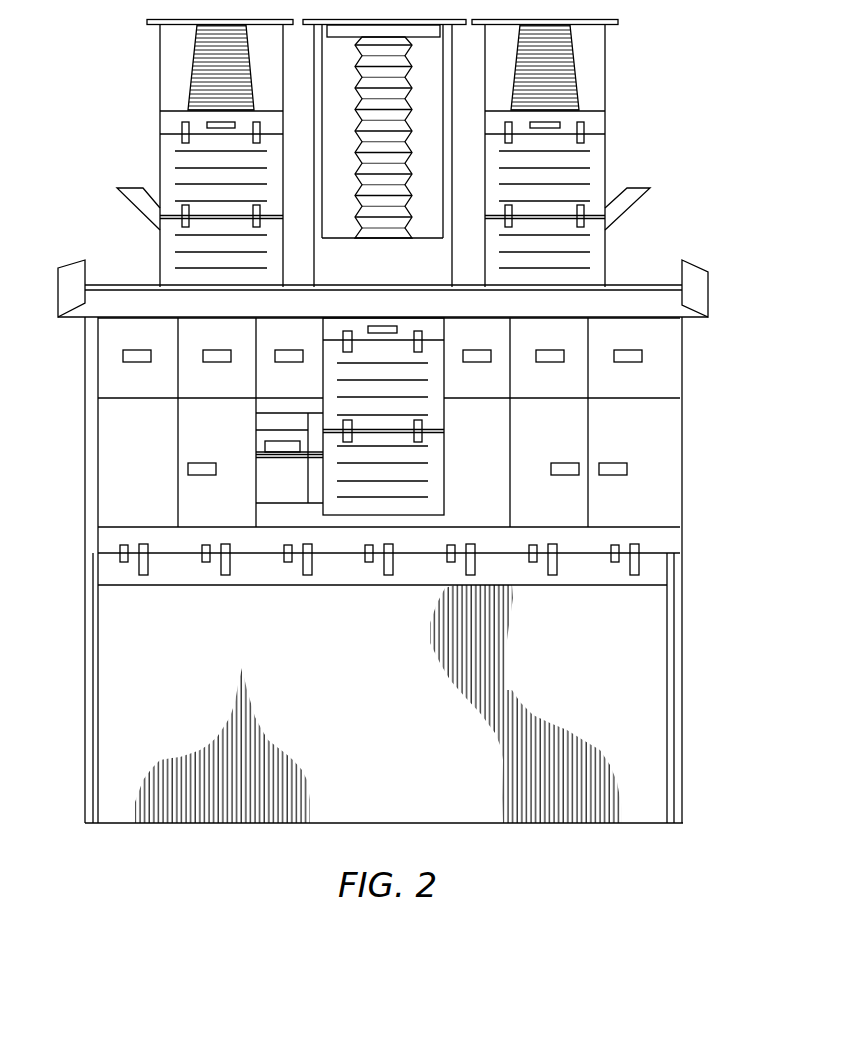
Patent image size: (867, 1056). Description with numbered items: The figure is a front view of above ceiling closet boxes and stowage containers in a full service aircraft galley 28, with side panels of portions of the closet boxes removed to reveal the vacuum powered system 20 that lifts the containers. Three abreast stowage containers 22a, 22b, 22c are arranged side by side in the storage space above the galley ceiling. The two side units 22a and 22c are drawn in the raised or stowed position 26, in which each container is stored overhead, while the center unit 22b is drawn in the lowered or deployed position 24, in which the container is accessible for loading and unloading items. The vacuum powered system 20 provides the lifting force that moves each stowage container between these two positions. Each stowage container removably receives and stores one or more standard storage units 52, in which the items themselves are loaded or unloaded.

The vacuum powered system 20 is at (635, 140).
The stowage container 22a is at (160, 72).
The stowage container 22b is at (322, 396).
The stowage container 22c is at (605, 65).
The lowered or deployed position 24 is at (452, 447).
The raised or stowed position 26 is at (137, 128).
The full service aircraft galley 28 is at (697, 450).
The standard storage unit 52 is at (170, 168).